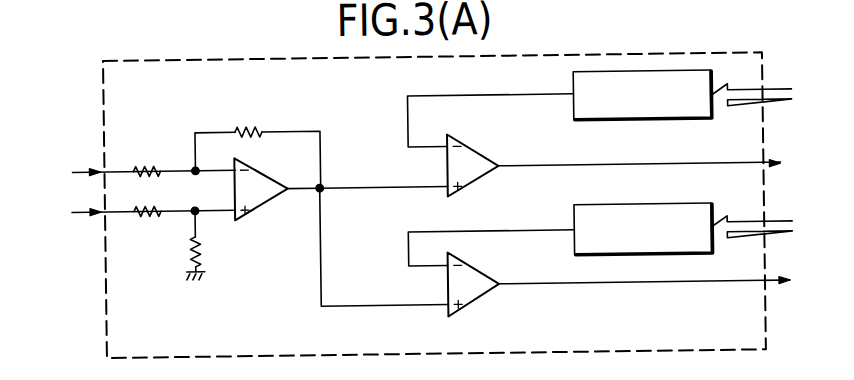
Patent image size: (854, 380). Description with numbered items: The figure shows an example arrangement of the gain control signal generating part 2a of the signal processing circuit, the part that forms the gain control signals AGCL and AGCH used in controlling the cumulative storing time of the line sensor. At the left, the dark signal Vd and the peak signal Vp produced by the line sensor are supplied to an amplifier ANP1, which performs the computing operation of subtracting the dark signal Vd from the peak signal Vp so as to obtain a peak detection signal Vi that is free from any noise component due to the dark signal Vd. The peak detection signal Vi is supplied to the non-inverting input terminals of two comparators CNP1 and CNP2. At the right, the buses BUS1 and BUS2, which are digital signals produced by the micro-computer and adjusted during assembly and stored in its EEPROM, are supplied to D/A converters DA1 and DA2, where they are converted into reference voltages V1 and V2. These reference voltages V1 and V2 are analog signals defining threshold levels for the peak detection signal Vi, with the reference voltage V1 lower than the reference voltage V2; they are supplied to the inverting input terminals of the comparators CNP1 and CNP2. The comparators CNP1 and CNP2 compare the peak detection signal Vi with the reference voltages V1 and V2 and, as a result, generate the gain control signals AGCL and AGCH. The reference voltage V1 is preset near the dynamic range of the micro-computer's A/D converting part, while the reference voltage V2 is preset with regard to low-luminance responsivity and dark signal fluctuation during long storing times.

The gain control signal generating part 2a is at (604, 61).
The amplifier ANP1 is at (263, 207).
The comparator CNP1 is at (483, 152).
The comparator CNP2 is at (481, 281).
The D/A converter DA1 is at (645, 127).
The D/A converter DA2 is at (650, 211).
The peak detection signal Vi is at (320, 189).
The reference voltage V1 is at (490, 107).
The reference voltage V2 is at (491, 235).
The dark signal Vd is at (143, 171).
The peak signal Vp is at (143, 210).
The bus BUS1 is at (756, 85).
The bus BUS2 is at (756, 218).
The gain control signal AGCL is at (662, 164).
The gain control signal AGCH is at (663, 282).